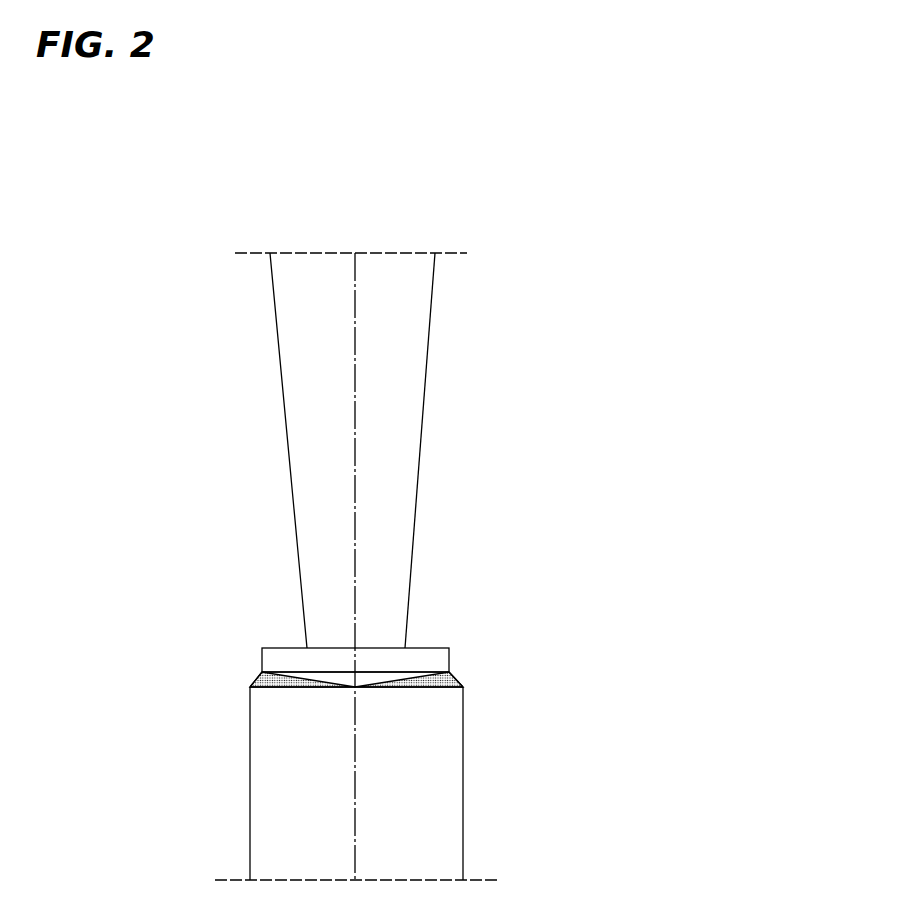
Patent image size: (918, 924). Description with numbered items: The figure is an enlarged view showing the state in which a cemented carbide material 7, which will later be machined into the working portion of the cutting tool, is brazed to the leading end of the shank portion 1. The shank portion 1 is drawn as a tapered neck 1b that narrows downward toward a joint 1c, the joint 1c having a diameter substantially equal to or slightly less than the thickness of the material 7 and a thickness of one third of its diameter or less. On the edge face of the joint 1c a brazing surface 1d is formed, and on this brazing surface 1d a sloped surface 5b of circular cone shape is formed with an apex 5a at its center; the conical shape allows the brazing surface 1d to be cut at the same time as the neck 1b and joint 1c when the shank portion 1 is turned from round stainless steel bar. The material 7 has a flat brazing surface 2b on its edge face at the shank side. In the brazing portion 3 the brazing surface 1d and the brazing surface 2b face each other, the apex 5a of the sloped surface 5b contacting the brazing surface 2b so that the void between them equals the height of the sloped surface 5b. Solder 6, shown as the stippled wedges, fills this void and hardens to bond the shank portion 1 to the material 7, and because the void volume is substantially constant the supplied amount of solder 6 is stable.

The shank portion 1 is at (466, 348).
The neck 1b is at (405, 405).
The joint 1c is at (440, 664).
The brazing surface 1d is at (323, 680).
The brazing surface 2b is at (458, 673).
The brazing portion 3 is at (232, 677).
The apex 5a is at (353, 687).
The sloped surface 5b is at (369, 682).
The solder 6 is at (412, 687).
The material 7 is at (270, 823).